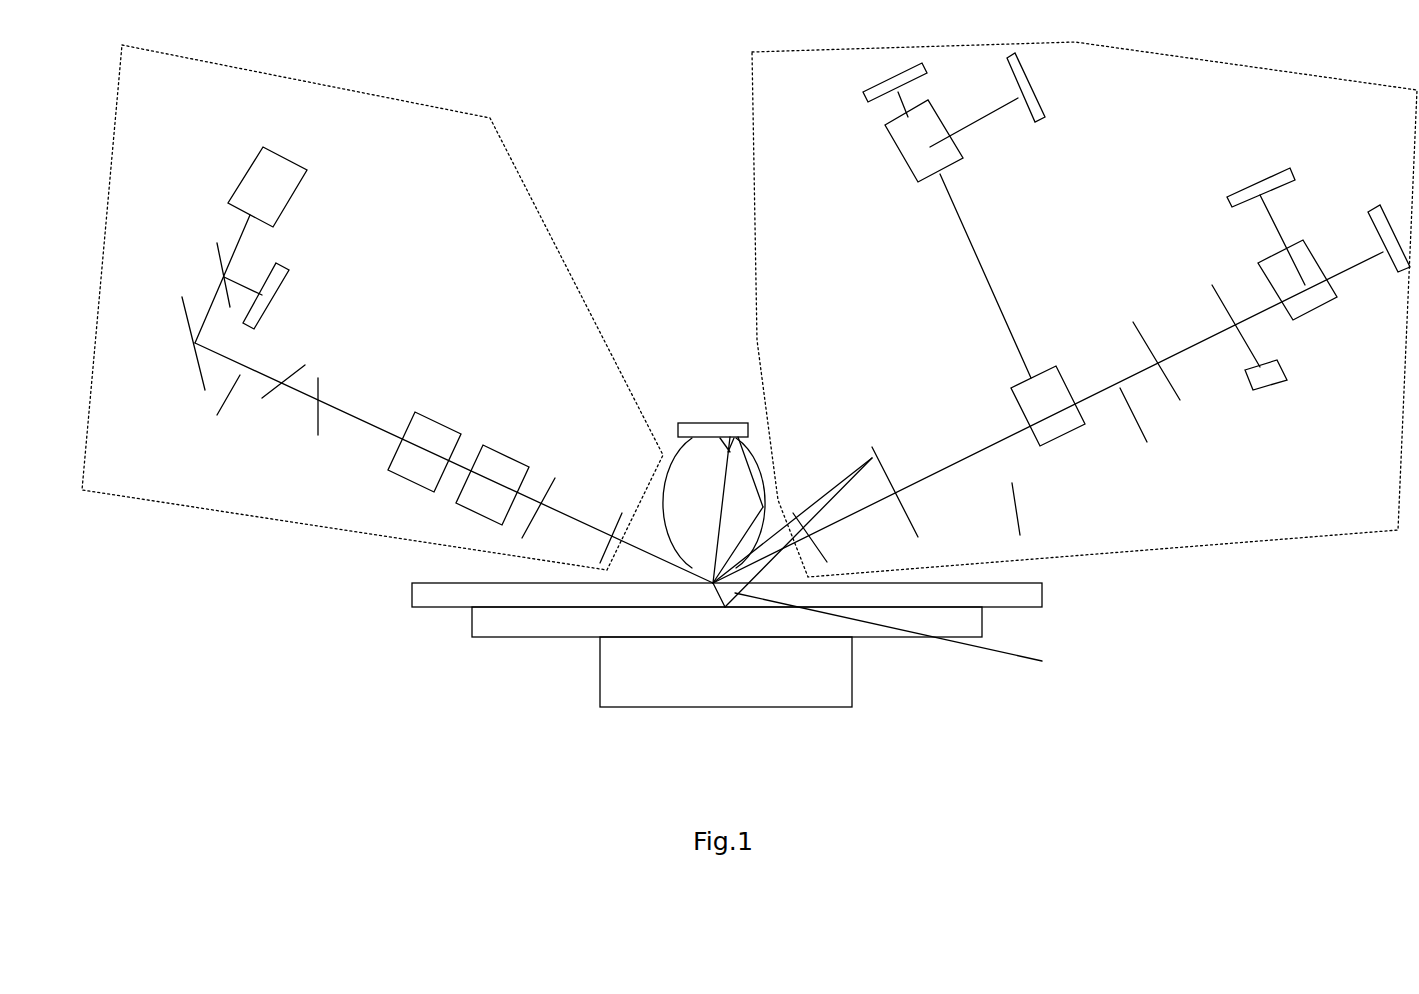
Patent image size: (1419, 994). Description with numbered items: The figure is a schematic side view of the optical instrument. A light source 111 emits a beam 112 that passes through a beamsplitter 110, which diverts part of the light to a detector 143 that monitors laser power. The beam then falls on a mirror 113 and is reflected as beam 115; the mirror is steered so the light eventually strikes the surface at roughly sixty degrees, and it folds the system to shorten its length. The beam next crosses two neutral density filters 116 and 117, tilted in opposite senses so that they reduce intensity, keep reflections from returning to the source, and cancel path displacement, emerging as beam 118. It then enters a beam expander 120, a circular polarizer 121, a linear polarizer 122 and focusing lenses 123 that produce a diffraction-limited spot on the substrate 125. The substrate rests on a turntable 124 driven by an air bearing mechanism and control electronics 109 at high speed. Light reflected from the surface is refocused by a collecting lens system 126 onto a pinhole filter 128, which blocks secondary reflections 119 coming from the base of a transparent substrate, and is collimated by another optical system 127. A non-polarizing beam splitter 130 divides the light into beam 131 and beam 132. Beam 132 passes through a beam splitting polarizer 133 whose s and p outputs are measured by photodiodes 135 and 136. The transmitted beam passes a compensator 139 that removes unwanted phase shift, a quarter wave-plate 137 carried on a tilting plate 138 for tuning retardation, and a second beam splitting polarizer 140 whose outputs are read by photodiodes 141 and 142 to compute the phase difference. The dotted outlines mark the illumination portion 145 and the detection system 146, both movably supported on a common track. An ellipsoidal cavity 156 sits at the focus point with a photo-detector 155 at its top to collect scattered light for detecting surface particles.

The air bearing mechanism and control electronics 109 is at (600, 673).
The beamsplitter 110 is at (213, 248).
The light source 111 is at (252, 163).
The beam 112 is at (238, 233).
The mirror 113 is at (175, 322).
The beam 115 is at (216, 416).
The filter 116 is at (273, 403).
The filter 117 is at (325, 383).
The beam 118 is at (357, 430).
The secondary reflections 119 is at (914, 647).
The beam expander 120 is at (430, 412).
The circular polarizer 121 is at (502, 447).
The linear polarizer 122 is at (565, 472).
The lenses 123 is at (620, 508).
The turntable 124 is at (467, 625).
The substrate 125 is at (398, 611).
The lens system 126 is at (795, 498).
The optical system 127 is at (1021, 528).
The filter 128 is at (872, 437).
The non-polarizing beam splitter 130 is at (1073, 438).
The beam 131 is at (1153, 438).
The beam 132 is at (990, 298).
The beam splitting polarizer 133 is at (893, 157).
The photodiode 135 is at (878, 75).
The photodiode 136 is at (1037, 83).
The wave-plate 137 is at (1240, 343).
The tilting plate 138 is at (1280, 393).
The compensator 139 is at (1133, 323).
The beam splitting polarizer 140 is at (1258, 263).
The photodiode 141 is at (1258, 170).
The photodiode 142 is at (1372, 207).
The detector 143 is at (290, 273).
The illumination portion 145 is at (560, 231).
The detection system 146 is at (742, 157).
The photo-detector 155 is at (707, 427).
The cavity 156 is at (677, 452).